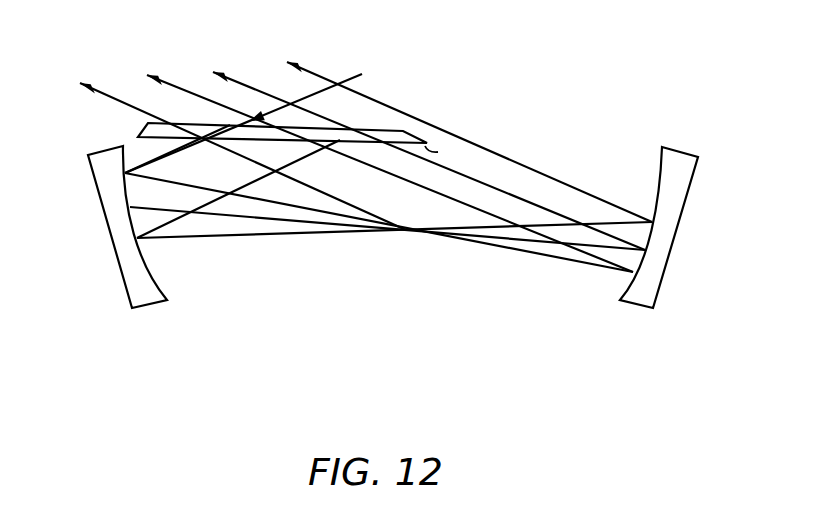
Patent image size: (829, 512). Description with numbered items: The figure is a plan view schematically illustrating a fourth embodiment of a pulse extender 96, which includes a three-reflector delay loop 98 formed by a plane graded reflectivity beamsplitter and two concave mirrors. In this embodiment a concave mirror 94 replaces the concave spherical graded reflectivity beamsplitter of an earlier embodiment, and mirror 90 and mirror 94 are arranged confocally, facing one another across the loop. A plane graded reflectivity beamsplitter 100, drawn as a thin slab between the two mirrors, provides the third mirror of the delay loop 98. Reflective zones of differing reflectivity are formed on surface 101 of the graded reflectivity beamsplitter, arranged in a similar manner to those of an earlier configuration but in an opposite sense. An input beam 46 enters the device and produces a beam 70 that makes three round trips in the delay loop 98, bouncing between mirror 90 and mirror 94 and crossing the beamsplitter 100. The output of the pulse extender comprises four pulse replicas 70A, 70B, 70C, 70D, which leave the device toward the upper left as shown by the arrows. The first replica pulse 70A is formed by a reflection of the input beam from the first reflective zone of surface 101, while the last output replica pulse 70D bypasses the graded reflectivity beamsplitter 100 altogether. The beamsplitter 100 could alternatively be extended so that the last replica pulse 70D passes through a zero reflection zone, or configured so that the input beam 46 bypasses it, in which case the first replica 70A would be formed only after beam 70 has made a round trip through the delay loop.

The input beam 46 is at (350, 77).
The beam 70 is at (278, 236).
The first replica pulse 70A is at (117, 97).
The pulse replica 70B is at (175, 82).
The pulse replica 70C is at (247, 78).
The last output replica pulse 70D is at (325, 72).
The concave spherical mirror 90 is at (632, 300).
The concave mirror 94 is at (151, 297).
The pulse extender 96 is at (472, 371).
The three-reflector delay loop 98 is at (369, 266).
The plane graded reflectivity beamsplitter 100 is at (386, 131).
The surface 101 is at (438, 152).